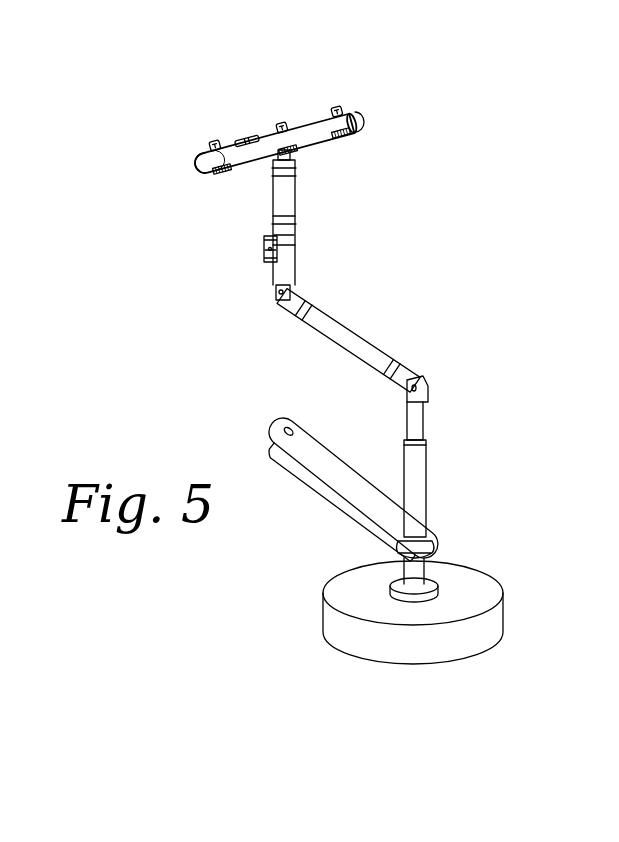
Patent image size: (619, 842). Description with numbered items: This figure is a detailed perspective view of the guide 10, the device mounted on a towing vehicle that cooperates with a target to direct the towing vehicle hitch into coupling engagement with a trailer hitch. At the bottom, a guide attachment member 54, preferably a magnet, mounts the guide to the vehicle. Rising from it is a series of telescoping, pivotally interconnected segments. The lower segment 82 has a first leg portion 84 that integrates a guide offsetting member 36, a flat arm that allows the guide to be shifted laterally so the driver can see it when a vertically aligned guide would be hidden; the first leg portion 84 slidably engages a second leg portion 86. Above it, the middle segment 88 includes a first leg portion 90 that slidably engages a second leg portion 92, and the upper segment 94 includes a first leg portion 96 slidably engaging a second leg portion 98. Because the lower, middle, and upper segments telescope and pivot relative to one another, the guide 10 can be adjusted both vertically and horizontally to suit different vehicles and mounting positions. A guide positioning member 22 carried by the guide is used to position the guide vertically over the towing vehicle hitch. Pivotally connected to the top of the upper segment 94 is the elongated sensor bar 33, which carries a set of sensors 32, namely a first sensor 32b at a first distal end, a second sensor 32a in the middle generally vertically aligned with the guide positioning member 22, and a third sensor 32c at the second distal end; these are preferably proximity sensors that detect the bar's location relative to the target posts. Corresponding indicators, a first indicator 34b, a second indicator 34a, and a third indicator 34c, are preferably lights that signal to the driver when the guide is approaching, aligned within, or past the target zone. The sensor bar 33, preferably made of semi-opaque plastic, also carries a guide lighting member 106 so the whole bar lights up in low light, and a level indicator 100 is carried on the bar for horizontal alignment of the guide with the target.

The guide 10 is at (238, 303).
The guide positioning member 22 is at (264, 256).
The crossbar 32 is at (275, 144).
The second sensor 32a is at (298, 150).
The first sensor 32b is at (222, 175).
The third sensor 32c is at (345, 145).
The sensor bar 33 is at (202, 160).
The second indicator 34a is at (280, 122).
The first indicator 34b is at (212, 140).
The third indicator 34c is at (339, 106).
The guide offsetting member 36 is at (318, 450).
The guide attachment member 54 is at (478, 600).
The lower segment 82 is at (427, 468).
The first leg portion 84 is at (427, 512).
The second leg portion 86 is at (425, 422).
The middle segment 88 is at (372, 336).
The first leg portion 90 is at (370, 355).
The second leg portion 92 is at (293, 294).
The upper segment 94 is at (305, 208).
The first leg portion 96 is at (291, 278).
The second leg portion 98 is at (285, 215).
The level indicator 100 is at (246, 137).
The guide lighting member 106 is at (357, 110).